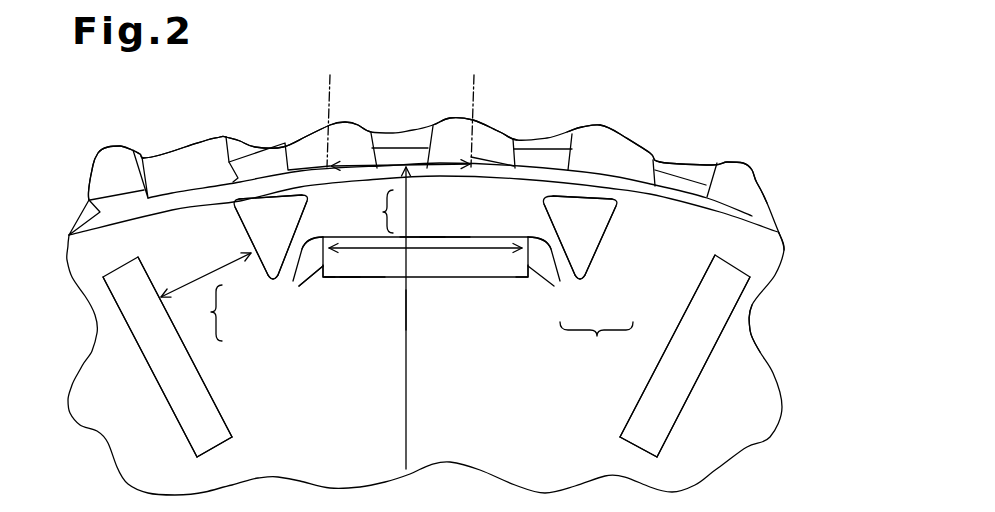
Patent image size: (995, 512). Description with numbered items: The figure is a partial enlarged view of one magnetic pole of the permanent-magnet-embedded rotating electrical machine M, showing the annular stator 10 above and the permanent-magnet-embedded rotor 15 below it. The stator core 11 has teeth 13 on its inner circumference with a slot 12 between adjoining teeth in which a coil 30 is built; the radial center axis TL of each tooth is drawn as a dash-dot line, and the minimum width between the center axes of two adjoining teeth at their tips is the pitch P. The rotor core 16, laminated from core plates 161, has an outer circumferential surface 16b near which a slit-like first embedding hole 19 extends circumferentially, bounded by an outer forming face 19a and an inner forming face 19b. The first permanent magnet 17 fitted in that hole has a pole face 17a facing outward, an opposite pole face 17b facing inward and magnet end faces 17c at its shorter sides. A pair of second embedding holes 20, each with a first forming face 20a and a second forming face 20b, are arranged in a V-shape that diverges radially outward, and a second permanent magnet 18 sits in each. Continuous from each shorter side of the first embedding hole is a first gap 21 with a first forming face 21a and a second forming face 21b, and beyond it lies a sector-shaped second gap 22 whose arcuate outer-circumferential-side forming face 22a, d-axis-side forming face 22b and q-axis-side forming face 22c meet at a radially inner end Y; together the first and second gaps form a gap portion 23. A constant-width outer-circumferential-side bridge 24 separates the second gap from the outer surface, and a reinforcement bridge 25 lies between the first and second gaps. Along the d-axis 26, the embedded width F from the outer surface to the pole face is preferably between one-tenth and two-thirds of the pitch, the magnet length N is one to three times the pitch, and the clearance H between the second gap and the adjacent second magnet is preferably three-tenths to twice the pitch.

The stator 10 is at (756, 162).
The stator core 11 is at (110, 178).
The slot 12 is at (431, 130).
The tooth 13 is at (303, 138).
The permanent-magnet-embedded rotor 15 is at (785, 233).
The rotor core 16 is at (768, 270).
The outer circumferential surface 16b is at (751, 213).
The core plate 161 is at (749, 328).
The first permanent magnet 17 is at (393, 279).
The pole face 17a is at (458, 236).
The opposite pole face 17b is at (365, 278).
The magnet end face 17c is at (299, 285).
The second permanent magnet 18 is at (218, 446).
The first embedding hole 19 is at (455, 279).
The outer forming face 19a is at (422, 243).
The inner forming face 19b is at (333, 280).
The second embedding hole 20 is at (218, 410).
The first forming face 20a is at (198, 372).
The second forming face 20b is at (170, 404).
The first gap 21 is at (274, 311).
The first forming face 21a is at (309, 236).
The second forming face 21b is at (325, 261).
The second gap 22 is at (424, 262).
The outer-circumferential-side forming face 22a is at (270, 197).
The d-axis-side forming face 22b is at (306, 201).
The q-axis-side forming face 22c is at (250, 240).
The gap portion 23 is at (408, 322).
The outer-circumferential-side bridge 24 is at (216, 186).
The reinforcement bridge 25 is at (308, 242).
The d-axis 26 is at (411, 432).
The coil 30 is at (386, 133).
The permanent-magnet-embedded rotating electrical machine M is at (88, 127).
The pitch P is at (400, 126).
The center axis TL is at (332, 76).
The embedded width F is at (380, 211).
The length N is at (416, 308).
The clearance H is at (196, 281).
The radially inner end Y is at (273, 284).